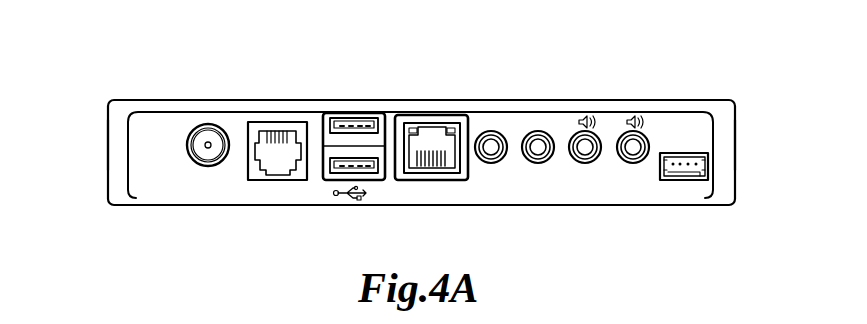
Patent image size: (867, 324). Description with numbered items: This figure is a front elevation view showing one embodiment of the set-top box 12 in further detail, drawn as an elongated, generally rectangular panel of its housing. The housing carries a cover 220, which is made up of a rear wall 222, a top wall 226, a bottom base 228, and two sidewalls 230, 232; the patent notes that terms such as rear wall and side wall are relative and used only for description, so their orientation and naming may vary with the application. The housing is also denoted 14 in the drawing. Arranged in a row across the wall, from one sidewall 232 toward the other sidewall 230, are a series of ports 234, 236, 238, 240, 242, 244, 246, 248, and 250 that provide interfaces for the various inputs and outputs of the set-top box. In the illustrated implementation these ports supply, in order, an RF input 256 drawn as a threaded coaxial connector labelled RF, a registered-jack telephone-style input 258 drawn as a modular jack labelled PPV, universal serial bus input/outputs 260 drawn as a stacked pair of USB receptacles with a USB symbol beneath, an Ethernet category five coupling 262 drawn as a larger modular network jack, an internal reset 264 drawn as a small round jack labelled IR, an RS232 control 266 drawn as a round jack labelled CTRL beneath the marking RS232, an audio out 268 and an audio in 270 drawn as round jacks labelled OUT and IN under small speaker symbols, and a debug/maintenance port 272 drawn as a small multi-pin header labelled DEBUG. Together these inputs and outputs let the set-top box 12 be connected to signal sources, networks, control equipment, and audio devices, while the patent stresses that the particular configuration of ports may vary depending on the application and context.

The set-top box 12 is at (112, 88).
The housing 14 is at (163, 209).
The cover 220 is at (715, 97).
The rear wall 222 is at (148, 193).
The top wall 226 is at (178, 99).
The bottom base 228 is at (297, 207).
The sidewall 230 is at (736, 145).
The sidewall 232 is at (107, 145).
The port 234 is at (209, 125).
The port 236 is at (278, 121).
The port 238 is at (358, 111).
The port 240 is at (433, 113).
The port 242 is at (491, 130).
The port 244 is at (537, 130).
The port 246 is at (586, 130).
The port 248 is at (634, 130).
The port 250 is at (685, 182).
The RF input 256 is at (208, 167).
The RJ-45 input 258 is at (258, 181).
The universal serial bus (USB) input/outputs 260 is at (348, 182).
The Ethernet category 5 (Cat 5) coupling 262 is at (432, 182).
The internal reset 264 is at (492, 164).
The RS232 control 266 is at (538, 164).
The audio out 268 is at (586, 164).
The audio in 270 is at (634, 164).
The debug/maintenance port 272 is at (709, 168).